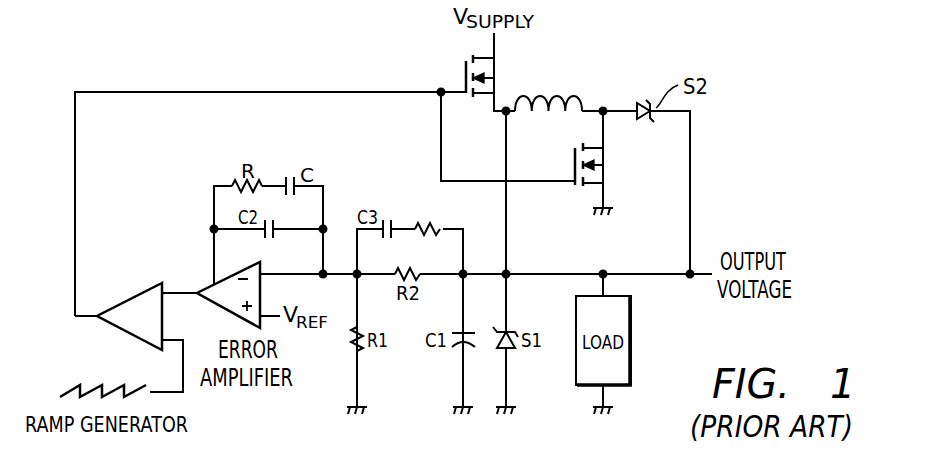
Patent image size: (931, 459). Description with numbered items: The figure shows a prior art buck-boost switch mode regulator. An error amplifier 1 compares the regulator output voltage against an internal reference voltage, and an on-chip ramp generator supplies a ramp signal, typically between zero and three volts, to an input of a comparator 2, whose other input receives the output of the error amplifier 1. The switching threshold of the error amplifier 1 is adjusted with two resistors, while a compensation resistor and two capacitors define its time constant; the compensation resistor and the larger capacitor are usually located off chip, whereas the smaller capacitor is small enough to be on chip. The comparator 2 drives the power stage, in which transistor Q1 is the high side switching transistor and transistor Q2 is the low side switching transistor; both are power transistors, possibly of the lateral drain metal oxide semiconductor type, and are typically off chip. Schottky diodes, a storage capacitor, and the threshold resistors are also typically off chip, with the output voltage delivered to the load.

The error amplifier 1 is at (208, 289).
The comparator 2 is at (130, 298).
The high side switching transistor Q1 is at (493, 76).
The low side switching transistor Q2 is at (603, 159).